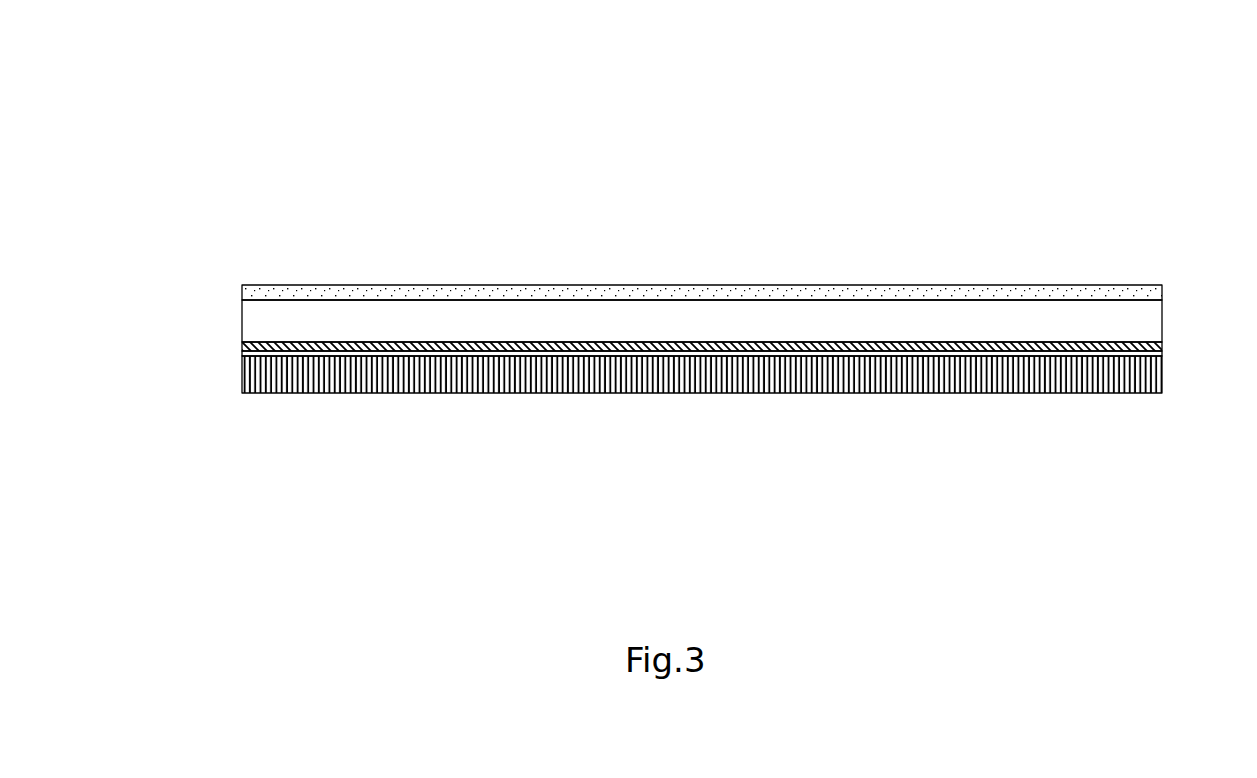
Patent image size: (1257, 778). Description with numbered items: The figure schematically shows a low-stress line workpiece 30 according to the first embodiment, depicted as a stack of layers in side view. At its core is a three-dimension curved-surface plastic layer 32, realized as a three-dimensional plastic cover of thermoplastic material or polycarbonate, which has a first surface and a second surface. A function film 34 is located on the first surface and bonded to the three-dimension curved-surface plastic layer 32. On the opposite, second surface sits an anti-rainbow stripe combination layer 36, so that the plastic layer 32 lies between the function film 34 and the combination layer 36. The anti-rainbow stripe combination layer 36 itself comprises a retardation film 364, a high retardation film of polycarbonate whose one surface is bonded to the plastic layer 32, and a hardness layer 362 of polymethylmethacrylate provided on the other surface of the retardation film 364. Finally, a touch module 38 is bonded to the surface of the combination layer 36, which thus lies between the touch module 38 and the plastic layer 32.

The low-stress line workpiece 30 is at (669, 221).
The three-dimension curved-surface plastic layer 32 is at (241, 321).
The function film 34 is at (1163, 290).
The anti-rainbow stripe combination layer 36 is at (669, 325).
The hardness layer 362 is at (241, 356).
The retardation film 364 is at (241, 348).
The touch module 38 is at (241, 377).